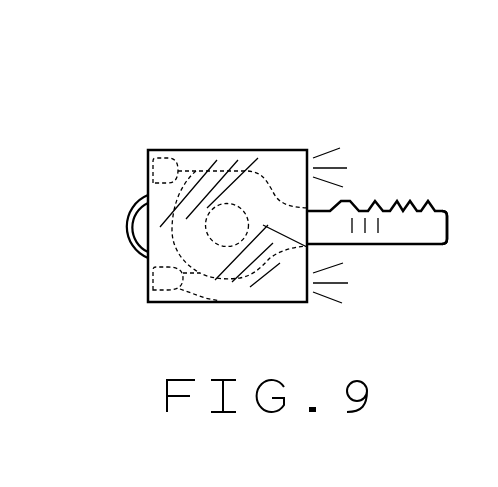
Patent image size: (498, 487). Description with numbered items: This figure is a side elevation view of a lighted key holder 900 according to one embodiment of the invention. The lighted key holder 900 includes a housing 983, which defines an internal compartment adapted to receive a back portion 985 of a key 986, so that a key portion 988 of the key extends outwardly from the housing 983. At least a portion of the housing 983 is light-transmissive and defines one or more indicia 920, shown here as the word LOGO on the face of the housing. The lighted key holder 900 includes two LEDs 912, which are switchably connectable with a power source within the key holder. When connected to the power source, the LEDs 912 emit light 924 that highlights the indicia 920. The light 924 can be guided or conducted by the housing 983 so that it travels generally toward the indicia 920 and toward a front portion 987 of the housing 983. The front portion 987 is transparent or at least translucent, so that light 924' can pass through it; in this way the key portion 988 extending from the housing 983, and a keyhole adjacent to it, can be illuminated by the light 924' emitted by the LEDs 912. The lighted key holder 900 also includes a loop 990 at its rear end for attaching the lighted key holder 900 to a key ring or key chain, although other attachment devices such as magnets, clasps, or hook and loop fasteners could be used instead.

The lighted key holder 900 is at (126, 162).
The loop 990 is at (126, 229).
The light 924 is at (164, 136).
The light 924' is at (356, 139).
The LEDs 912 is at (152, 288).
The back portion of key 985 is at (264, 178).
The housing 983 is at (222, 302).
The indicia 920 is at (307, 247).
The key 986 is at (389, 245).
The front portion of housing 987 is at (308, 196).
The key portion 988 is at (447, 208).